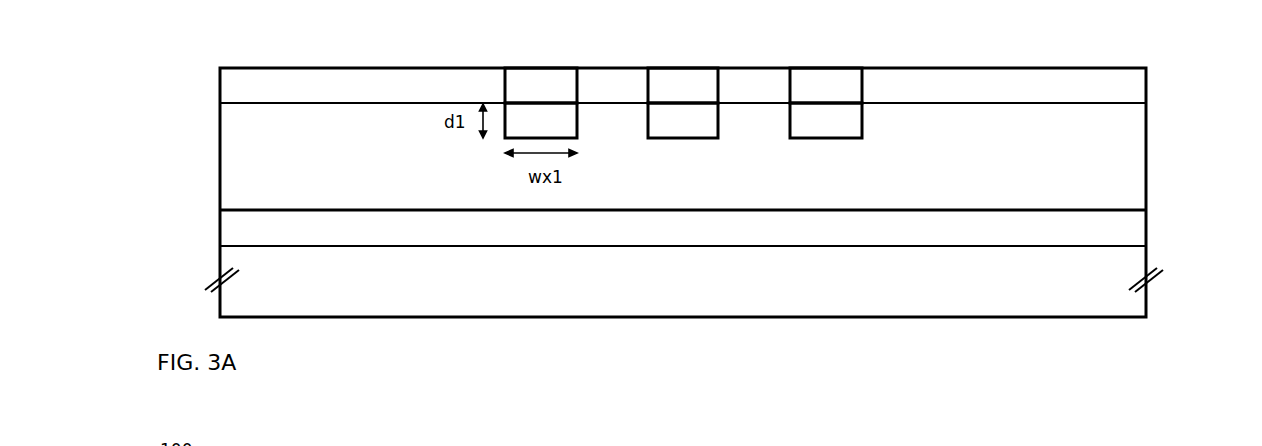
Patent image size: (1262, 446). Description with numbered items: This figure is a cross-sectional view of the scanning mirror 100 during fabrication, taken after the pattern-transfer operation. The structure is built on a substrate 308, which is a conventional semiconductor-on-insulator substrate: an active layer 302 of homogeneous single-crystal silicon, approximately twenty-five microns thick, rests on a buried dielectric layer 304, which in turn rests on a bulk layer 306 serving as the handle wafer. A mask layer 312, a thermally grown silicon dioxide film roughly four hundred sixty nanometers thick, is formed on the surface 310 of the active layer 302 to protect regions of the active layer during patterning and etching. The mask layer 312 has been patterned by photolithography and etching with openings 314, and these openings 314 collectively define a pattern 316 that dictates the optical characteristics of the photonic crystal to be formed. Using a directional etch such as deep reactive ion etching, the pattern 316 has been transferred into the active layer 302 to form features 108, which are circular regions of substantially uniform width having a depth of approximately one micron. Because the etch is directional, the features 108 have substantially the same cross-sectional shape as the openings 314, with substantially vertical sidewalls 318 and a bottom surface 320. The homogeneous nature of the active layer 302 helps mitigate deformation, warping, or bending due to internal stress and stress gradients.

The scanning mirror 100 is at (221, 42).
The mask layer 312 is at (261, 96).
The surface 310 is at (933, 104).
The openings 314 is at (558, 96).
The features 108 is at (558, 131).
The pattern 316 is at (868, 62).
The sidewalls 318 is at (790, 126).
The bottom surface 320 is at (826, 139).
The active layer 302 is at (261, 199).
The buried dielectric layer 304 is at (261, 239).
The bulk layer 306 is at (261, 309).
The substrate 308 is at (1167, 103).